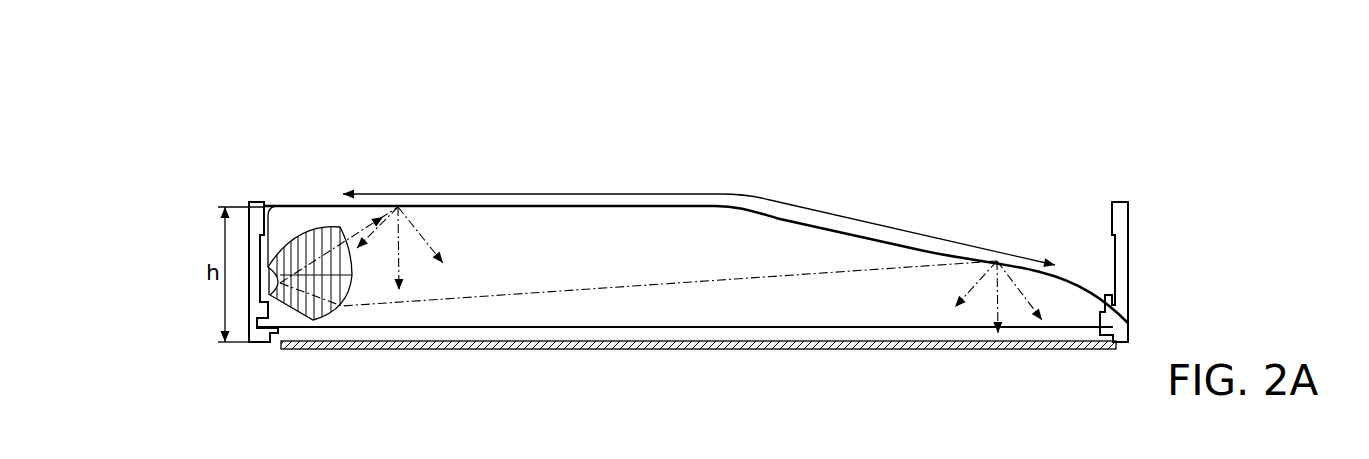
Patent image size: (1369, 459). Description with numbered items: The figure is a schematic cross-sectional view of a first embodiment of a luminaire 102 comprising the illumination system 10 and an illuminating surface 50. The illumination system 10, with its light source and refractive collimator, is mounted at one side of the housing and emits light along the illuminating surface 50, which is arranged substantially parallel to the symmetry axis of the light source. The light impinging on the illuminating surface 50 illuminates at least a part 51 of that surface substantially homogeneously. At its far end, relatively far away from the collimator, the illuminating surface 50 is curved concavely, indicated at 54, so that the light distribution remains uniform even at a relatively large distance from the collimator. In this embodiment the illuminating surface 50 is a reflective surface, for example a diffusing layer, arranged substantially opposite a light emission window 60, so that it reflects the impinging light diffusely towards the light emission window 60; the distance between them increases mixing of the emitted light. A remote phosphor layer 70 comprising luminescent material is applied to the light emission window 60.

The illumination system 10 is at (302, 225).
The illuminating surface 50 is at (633, 208).
The homogeneously illuminated part 51 is at (699, 219).
The concavely curved far end 54 is at (958, 237).
The light emission window 60 is at (577, 332).
The remote phosphor layer 70 is at (497, 350).
The luminaire 102 is at (1026, 127).